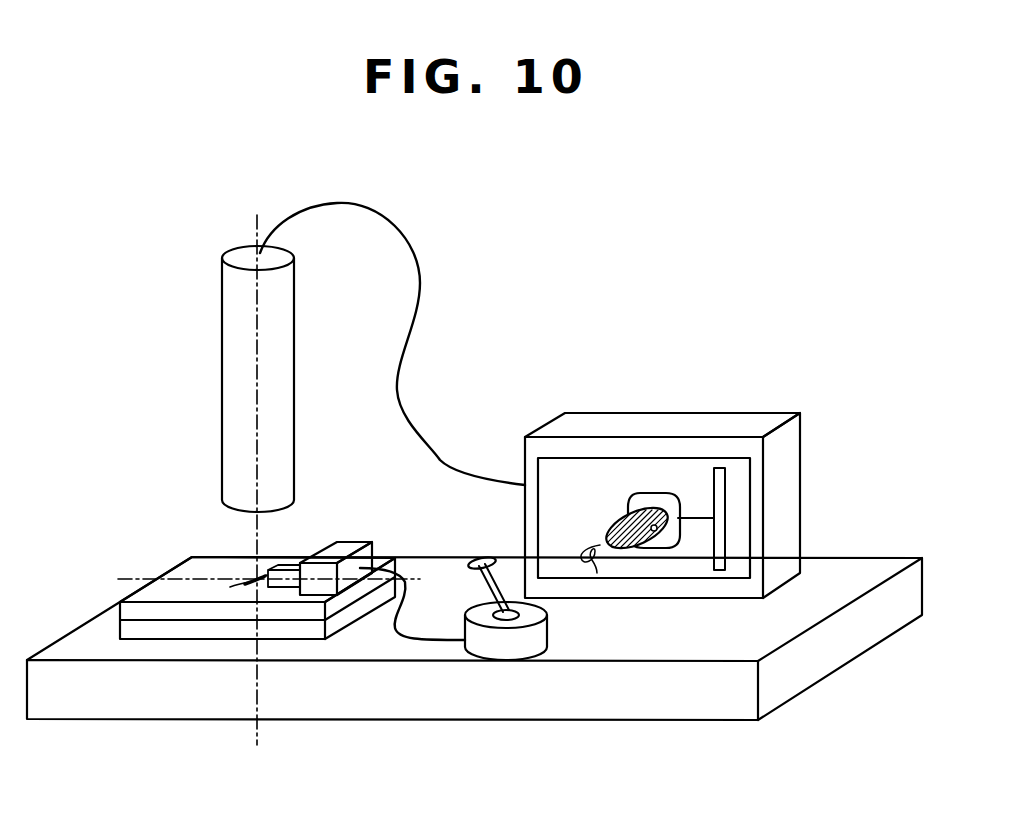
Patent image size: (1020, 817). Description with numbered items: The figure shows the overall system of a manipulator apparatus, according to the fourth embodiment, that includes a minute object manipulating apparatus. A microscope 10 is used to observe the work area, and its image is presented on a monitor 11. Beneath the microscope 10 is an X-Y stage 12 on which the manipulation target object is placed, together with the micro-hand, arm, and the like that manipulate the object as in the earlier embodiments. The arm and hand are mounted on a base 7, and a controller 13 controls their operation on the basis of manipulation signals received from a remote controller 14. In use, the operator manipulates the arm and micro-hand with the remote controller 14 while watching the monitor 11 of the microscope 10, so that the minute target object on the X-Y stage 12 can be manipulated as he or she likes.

The base 7 is at (297, 563).
The microscope 10 is at (222, 372).
The monitor 11 is at (663, 412).
The X-Y stage 12 is at (118, 630).
The controller 13 is at (347, 542).
The remote controller 14 is at (550, 638).